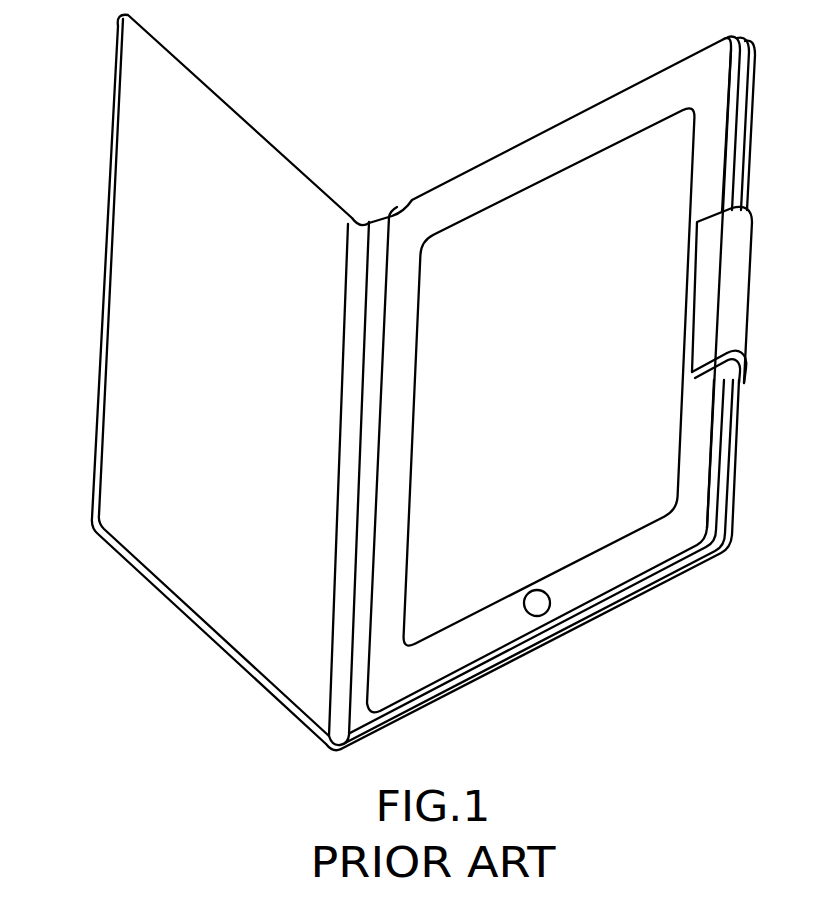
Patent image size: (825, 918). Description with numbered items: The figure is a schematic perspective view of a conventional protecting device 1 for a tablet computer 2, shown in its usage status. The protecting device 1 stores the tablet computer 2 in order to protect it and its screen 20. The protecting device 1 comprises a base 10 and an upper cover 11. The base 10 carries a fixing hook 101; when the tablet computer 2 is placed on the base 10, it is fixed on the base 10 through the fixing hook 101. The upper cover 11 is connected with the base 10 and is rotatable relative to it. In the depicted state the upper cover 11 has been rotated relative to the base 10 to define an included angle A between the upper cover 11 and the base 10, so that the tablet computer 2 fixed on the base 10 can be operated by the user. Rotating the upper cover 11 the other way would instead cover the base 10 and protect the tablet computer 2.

The protecting device 1 is at (434, 382).
The tablet computer 2 is at (606, 360).
The base 10 is at (576, 393).
The upper cover 11 is at (122, 283).
The screen 20 is at (655, 210).
The fixing hook 101 is at (730, 287).
The included angle A is at (367, 728).